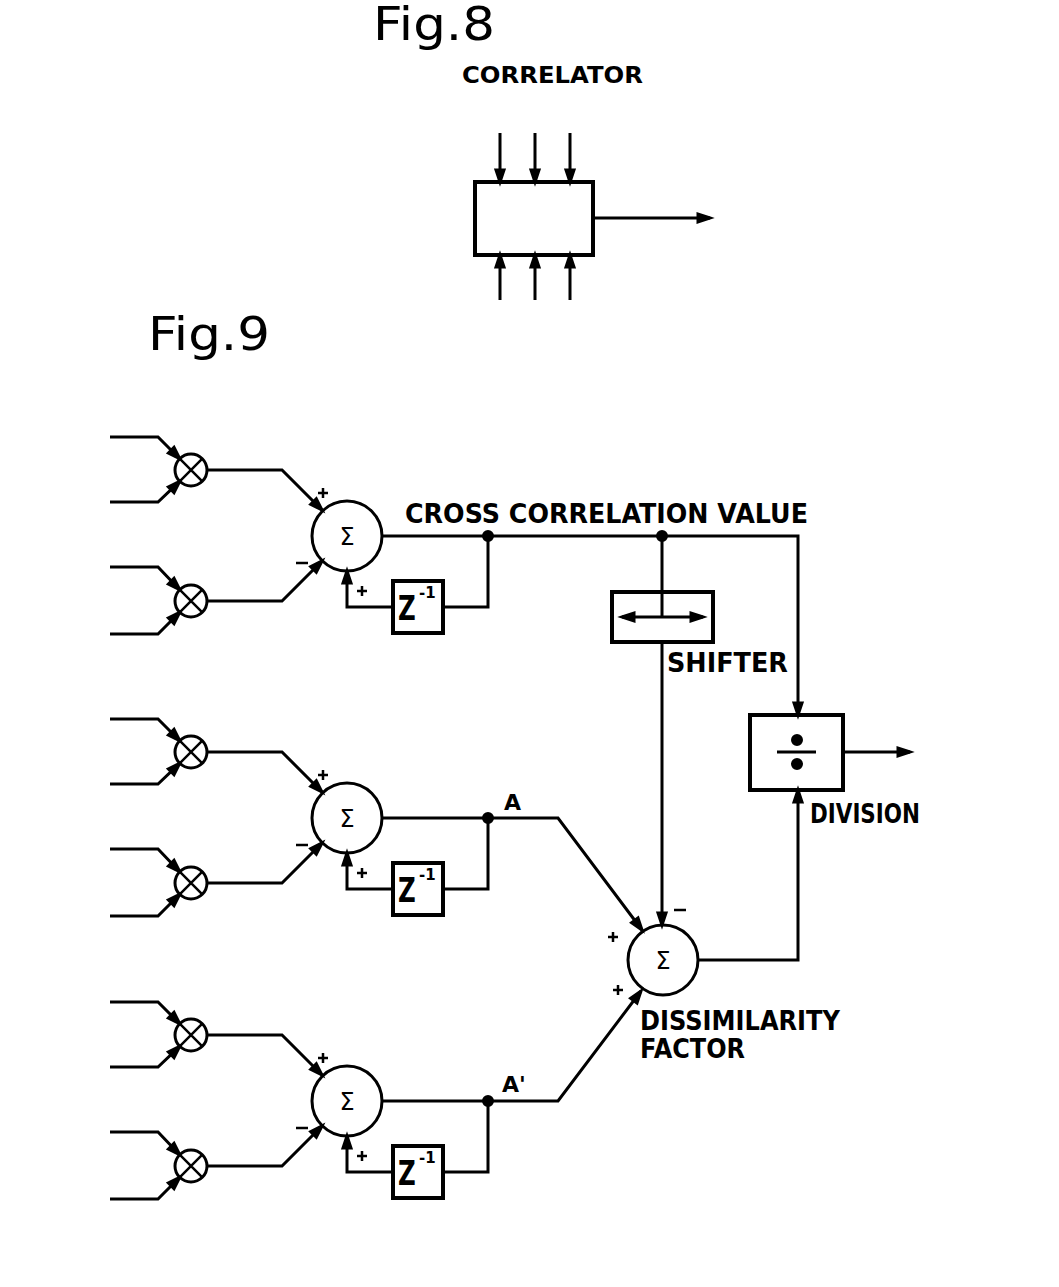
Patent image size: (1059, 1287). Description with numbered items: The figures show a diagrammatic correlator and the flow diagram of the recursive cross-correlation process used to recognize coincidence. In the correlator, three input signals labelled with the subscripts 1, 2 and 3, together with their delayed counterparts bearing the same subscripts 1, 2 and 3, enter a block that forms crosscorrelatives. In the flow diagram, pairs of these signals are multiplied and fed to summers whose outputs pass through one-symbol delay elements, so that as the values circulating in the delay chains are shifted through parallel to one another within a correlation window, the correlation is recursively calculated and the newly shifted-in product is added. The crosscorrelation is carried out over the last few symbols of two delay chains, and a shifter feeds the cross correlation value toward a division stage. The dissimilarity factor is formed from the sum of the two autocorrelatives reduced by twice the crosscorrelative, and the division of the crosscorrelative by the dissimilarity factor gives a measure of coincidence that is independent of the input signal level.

In FIG. 8, the first sound signal n1 input 1 is at (498, 218).
In FIG. 9, the first sound signal n1 input 1 is at (127, 894).
In FIG. 8, the second sound signal n2 input 2 is at (533, 218).
In FIG. 9, the second sound signal n2 input 2 is at (127, 471).
In FIG. 8, the third sound signal n3 input 3 is at (568, 218).
In FIG. 9, the third sound signal n3 input 3 is at (127, 884).